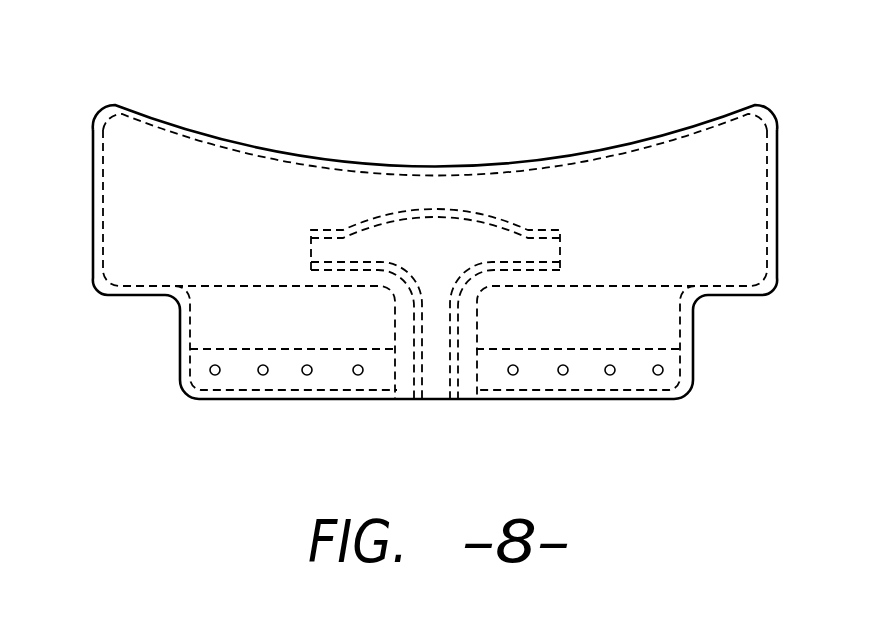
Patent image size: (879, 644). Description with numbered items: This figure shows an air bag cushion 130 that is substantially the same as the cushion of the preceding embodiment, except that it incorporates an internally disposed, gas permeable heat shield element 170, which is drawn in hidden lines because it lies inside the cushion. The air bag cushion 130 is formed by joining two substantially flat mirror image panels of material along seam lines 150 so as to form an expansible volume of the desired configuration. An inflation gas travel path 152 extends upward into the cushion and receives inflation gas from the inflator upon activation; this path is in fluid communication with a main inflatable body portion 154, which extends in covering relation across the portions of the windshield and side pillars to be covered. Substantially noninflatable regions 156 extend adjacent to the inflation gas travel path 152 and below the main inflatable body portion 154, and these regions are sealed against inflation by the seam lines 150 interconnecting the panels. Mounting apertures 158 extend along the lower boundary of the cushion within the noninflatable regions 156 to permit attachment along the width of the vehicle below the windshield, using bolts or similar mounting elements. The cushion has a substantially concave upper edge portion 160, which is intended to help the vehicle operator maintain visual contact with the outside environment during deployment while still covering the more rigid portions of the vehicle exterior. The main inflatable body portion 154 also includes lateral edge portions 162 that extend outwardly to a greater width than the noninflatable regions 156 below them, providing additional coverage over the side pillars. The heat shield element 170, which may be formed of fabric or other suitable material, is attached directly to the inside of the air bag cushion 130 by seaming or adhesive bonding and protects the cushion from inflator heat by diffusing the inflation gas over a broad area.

The air bag cushion 130 is at (415, 101).
The seam lines 150 is at (177, 133).
The inflation gas travel path 152 is at (442, 380).
The main inflatable body portion 154 is at (697, 160).
The substantially noninflatable regions 156 is at (213, 327).
The mounting apertures 158 is at (693, 423).
The concave upper edge portion 160 is at (257, 146).
The lateral edge portions 162 is at (93, 175).
The heat shield element 170 is at (472, 217).